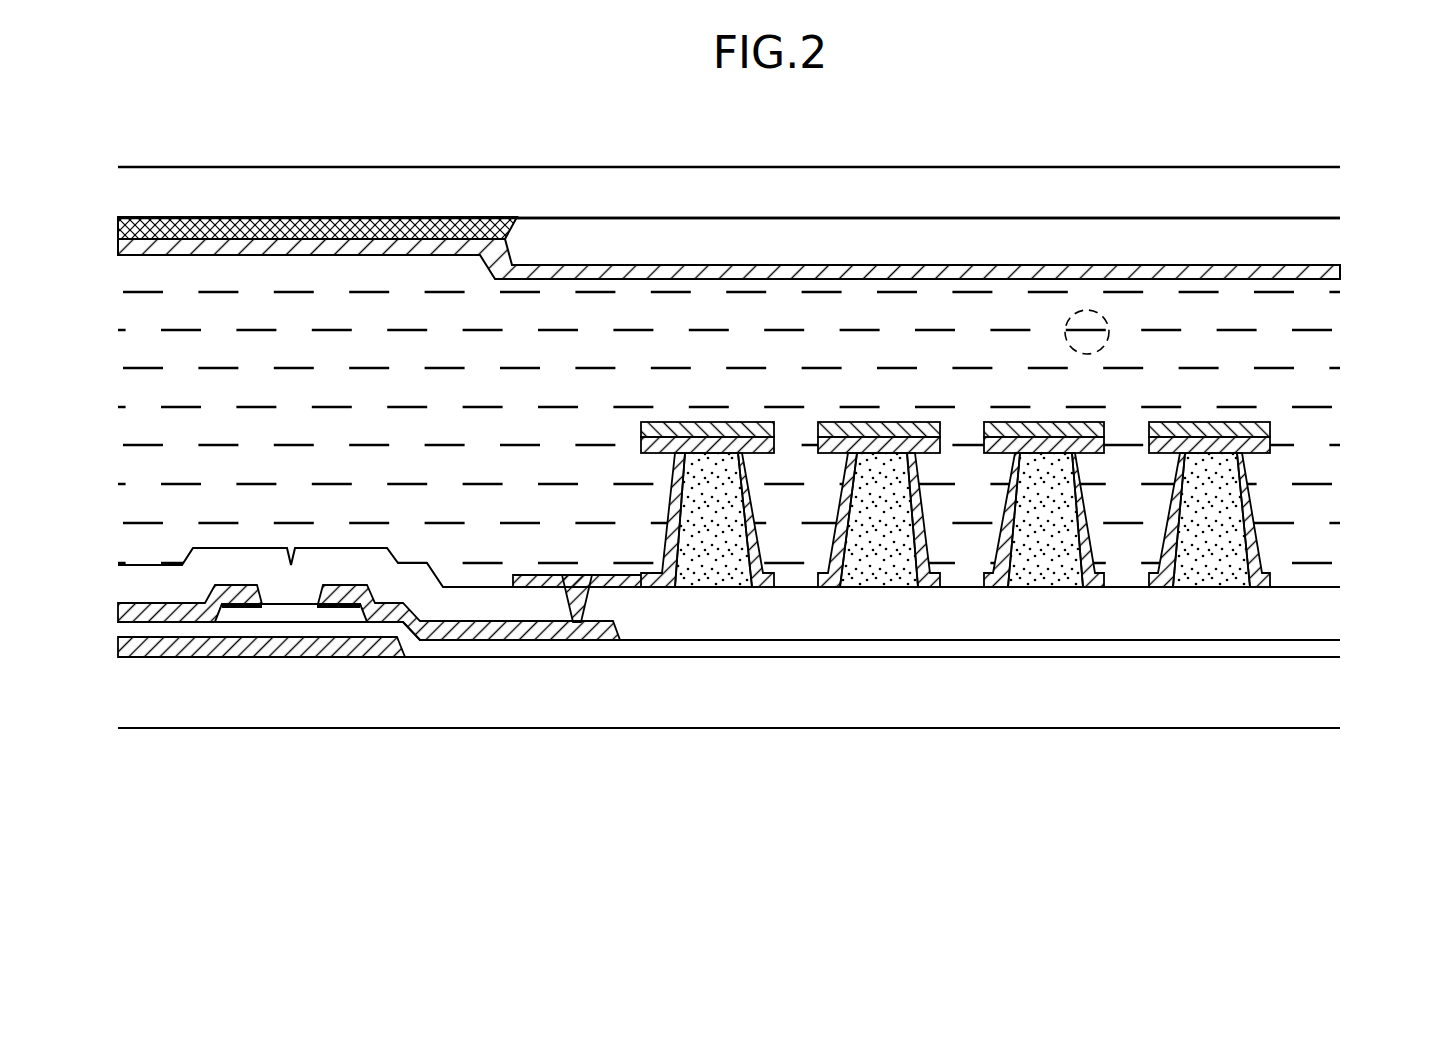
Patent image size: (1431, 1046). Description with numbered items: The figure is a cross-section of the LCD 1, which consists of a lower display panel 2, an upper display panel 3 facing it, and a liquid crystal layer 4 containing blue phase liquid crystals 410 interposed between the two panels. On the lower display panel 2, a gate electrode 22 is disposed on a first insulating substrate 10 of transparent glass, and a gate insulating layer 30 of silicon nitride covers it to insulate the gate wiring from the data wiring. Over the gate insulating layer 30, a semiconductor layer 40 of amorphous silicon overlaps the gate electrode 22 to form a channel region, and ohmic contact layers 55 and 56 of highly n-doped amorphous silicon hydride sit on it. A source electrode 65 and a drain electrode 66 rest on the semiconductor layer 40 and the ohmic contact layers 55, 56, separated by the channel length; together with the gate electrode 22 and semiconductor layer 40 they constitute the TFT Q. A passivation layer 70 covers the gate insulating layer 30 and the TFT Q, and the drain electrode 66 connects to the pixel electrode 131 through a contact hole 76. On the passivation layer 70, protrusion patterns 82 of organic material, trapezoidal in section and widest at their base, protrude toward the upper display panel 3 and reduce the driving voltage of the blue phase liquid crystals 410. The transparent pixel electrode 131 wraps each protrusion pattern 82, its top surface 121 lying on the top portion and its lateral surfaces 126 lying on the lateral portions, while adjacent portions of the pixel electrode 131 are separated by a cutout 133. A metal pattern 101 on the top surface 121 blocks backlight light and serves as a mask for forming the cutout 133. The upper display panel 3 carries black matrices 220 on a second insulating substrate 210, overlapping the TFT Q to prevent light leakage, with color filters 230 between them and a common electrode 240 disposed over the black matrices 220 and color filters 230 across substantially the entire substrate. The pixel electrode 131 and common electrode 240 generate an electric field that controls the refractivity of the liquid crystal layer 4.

The LCD 1 is at (723, 865).
The lower display panel 2 is at (1389, 730).
The upper display panel 3 is at (1389, 167).
The liquid crystal layer 4 is at (1389, 279).
The first insulating substrate 10 is at (520, 700).
The gate electrode 22 is at (290, 640).
The gate insulating layer 30 is at (697, 648).
The semiconductor layer 40 is at (230, 613).
The ohmic contact layer 55 is at (258, 612).
The ohmic contact layer 56 is at (320, 612).
The source electrode 65 is at (148, 613).
The drain electrode 66 is at (362, 600).
The passivation layer 70 is at (885, 610).
The contact hole 76 is at (574, 564).
The protrusion pattern 82 is at (1243, 512).
The metal pattern 101 is at (1273, 430).
The top surface 121 is at (1272, 448).
The lateral surfaces 126 is at (1260, 472).
The pixel electrode 131 is at (1019, 502).
The cutout 133 is at (965, 574).
The second insulating substrate 210 is at (281, 207).
The black matrix 220 is at (438, 228).
The color filter 230 is at (775, 248).
The common electrode 240 is at (918, 263).
The blue phase liquid crystal 410 is at (1083, 308).
The TFT Q is at (260, 528).